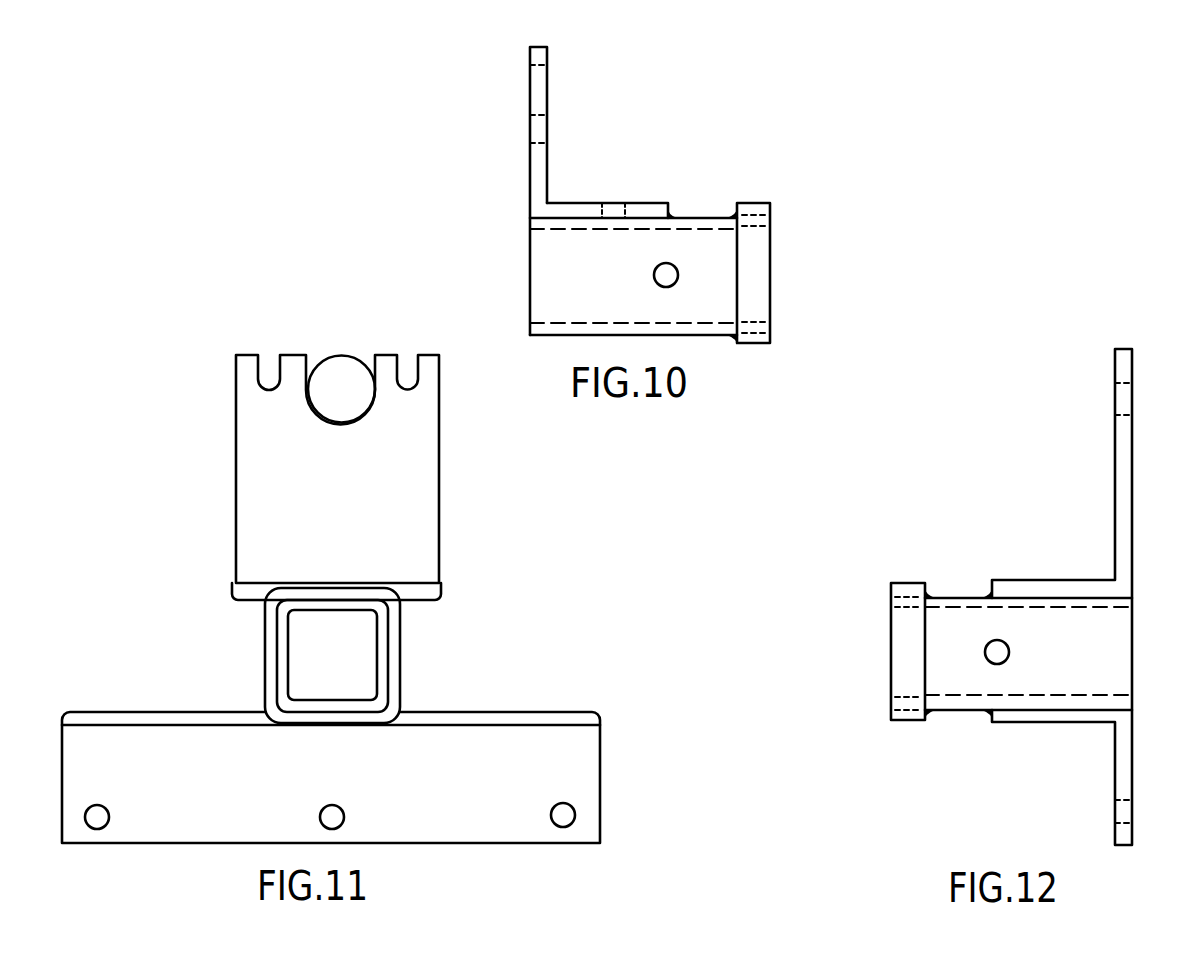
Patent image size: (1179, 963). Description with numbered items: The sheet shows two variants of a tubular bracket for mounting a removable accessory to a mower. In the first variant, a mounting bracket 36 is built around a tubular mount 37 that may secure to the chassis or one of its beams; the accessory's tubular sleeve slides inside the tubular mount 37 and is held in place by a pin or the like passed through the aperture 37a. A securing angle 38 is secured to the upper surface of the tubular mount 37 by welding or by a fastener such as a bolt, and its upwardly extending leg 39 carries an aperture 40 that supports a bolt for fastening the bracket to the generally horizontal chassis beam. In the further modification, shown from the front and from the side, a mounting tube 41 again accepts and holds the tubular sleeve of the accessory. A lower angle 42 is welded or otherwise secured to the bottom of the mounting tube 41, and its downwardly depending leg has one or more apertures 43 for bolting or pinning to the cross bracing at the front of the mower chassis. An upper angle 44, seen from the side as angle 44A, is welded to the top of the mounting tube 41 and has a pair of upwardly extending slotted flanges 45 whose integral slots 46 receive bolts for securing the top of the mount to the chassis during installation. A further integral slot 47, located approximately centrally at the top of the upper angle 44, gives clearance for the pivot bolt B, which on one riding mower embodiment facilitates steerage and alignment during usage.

In FIG. 10, the mounting bracket 36 is at (569, 191).
In FIG. 10, the tubular mount 37 is at (676, 274).
In FIG. 10, the aperture 37a is at (655, 270).
In FIG. 10, the securing angle 38 is at (592, 203).
In FIG. 10, the upwardly extending leg 39 is at (547, 98).
In FIG. 10, the aperture 40 is at (530, 143).
In FIG. 11, the mounting tube 41 is at (402, 657).
In FIG. 12, the mounting tube 41 is at (950, 597).
In FIG. 11, the lower angle 42 is at (331, 753).
In FIG. 12, the lower angle 42 is at (1112, 785).
In FIG. 11, the apertures 43 is at (110, 812).
In FIG. 12, the apertures 43 is at (1116, 822).
In FIG. 11, the upper angle 44 is at (334, 442).
In FIG. 12, the upright plate 44A is at (1115, 435).
In FIG. 11, the slotted flanges 45 is at (236, 383).
In FIG. 11, the slots 46 is at (269, 357).
In FIG. 11, the integral slot 47 is at (323, 356).
In FIG. 11, the pivot bolt B is at (340, 380).
In FIG. 12, the pivot bolt B is at (1078, 781).